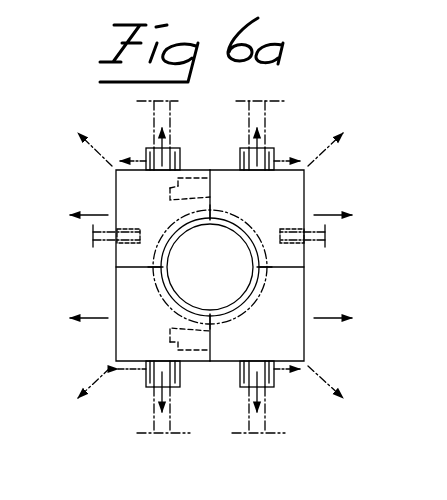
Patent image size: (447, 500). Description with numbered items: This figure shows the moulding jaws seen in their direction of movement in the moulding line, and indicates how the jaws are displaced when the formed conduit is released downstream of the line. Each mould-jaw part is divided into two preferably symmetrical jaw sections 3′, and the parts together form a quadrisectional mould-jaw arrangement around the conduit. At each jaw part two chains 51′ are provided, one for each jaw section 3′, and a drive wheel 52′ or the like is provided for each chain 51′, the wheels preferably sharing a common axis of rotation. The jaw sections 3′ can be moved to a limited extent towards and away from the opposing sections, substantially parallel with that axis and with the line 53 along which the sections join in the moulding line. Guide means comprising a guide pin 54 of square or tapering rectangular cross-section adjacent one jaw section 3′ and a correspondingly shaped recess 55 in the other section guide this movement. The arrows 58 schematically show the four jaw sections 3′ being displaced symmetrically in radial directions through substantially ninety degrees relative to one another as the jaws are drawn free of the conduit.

The jaw section 3′ is at (116, 203).
The chain 51′ is at (146, 153).
The drive wheel 52′ is at (180, 101).
The line 53 is at (117, 267).
The guide pin 54 is at (212, 192).
The recess 55 is at (182, 181).
The arrows 58 is at (102, 153).